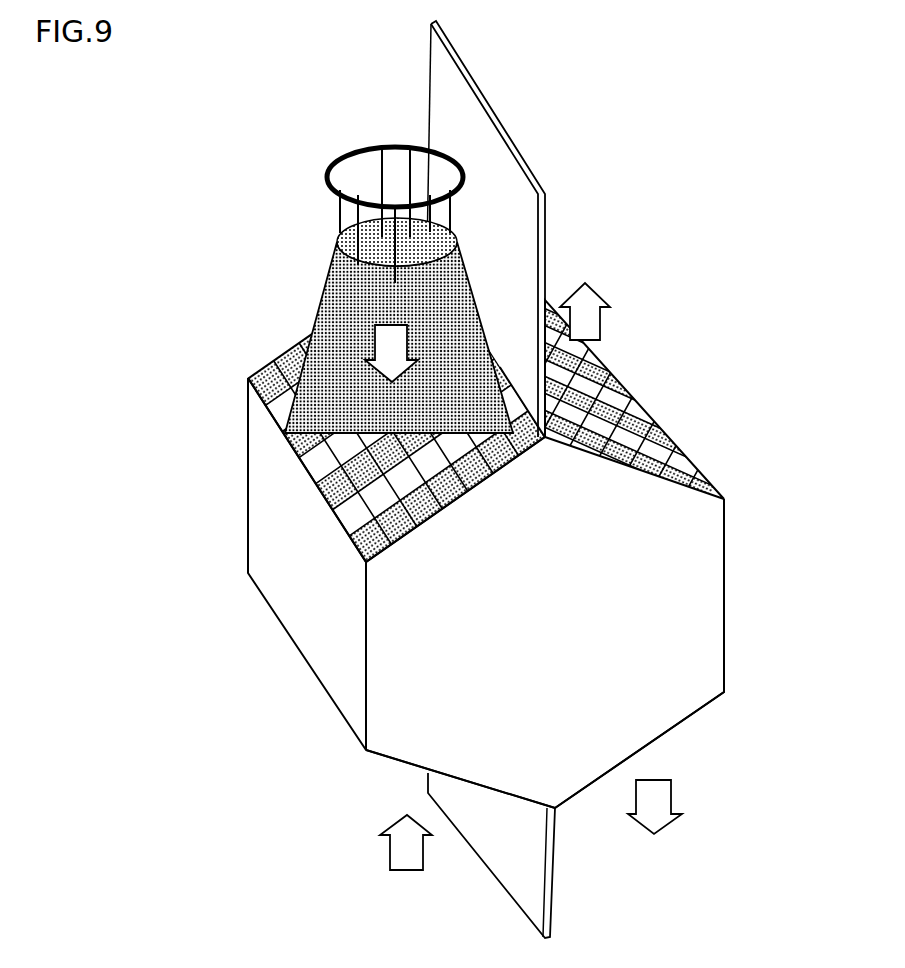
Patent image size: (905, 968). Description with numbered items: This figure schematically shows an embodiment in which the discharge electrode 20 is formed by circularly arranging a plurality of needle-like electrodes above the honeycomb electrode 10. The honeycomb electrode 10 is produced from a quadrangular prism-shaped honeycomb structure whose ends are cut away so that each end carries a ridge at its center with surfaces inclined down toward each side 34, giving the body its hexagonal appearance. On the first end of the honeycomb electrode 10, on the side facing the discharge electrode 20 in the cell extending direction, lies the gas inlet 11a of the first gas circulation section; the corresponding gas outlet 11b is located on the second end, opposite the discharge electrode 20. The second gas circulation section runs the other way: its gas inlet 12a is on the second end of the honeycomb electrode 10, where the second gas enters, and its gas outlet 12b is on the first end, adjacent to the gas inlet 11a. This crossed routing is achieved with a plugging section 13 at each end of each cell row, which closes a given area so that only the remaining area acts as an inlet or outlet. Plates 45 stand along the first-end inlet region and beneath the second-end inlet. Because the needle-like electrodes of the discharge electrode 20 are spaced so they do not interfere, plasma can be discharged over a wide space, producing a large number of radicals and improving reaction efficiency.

The honeycomb electrode 10 is at (742, 704).
The gas inlet 11a is at (270, 373).
The gas outlet 11b is at (666, 735).
The gas inlet 12a is at (393, 762).
The gas outlet 12b is at (605, 387).
The plugging section 13 is at (330, 538).
The side 34 is at (317, 625).
The discharge electrode 20 is at (370, 148).
The guide plate 45 is at (517, 177).